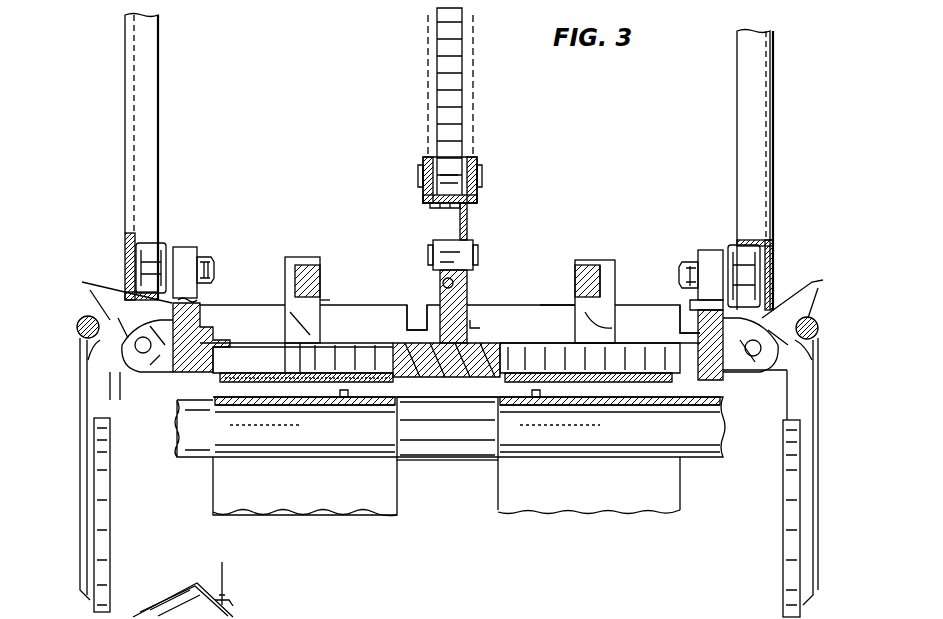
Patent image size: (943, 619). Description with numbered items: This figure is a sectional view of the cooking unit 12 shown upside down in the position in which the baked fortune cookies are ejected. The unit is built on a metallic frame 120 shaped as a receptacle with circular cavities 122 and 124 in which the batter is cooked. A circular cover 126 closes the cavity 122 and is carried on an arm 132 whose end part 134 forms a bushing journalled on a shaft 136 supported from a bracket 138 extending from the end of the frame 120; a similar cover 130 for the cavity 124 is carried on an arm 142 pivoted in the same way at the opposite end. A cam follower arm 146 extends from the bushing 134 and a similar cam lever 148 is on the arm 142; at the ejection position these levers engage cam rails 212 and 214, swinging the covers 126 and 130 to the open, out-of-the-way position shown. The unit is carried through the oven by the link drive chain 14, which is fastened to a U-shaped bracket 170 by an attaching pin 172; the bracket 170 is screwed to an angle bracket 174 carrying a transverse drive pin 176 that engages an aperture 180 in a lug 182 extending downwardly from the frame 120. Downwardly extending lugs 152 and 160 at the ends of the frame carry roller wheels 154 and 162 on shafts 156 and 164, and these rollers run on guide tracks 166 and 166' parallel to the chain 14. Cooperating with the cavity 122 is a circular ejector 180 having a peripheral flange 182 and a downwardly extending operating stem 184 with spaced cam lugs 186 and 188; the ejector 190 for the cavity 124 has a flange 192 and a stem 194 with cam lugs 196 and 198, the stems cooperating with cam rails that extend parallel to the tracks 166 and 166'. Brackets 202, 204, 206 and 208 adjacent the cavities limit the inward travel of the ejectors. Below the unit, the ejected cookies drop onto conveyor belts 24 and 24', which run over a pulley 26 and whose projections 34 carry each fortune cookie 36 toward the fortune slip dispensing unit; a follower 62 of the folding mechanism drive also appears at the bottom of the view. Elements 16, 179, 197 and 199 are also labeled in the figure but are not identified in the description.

The cooking unit 12 is at (650, 251).
The link drive chain 14 is at (475, 128).
The chain 16 is at (447, 76).
The conveyor belt 24 is at (323, 486).
The conveyor belt 24' is at (594, 498).
The pulley or roller 26 is at (332, 445).
The projections 34 is at (350, 398).
The fortune cookie 36 is at (388, 378).
The follower 62 is at (242, 615).
The metallic frame 120 is at (450, 293).
The circular cavity 122 is at (180, 398).
The circular cavity 124 is at (632, 398).
The circular cover 126 is at (92, 502).
The circular cover 130 is at (783, 540).
The arm 132 is at (82, 415).
The end part (bushing) 134 is at (123, 380).
The shaft 136 is at (140, 350).
The bracket 138 is at (88, 316).
The arm 142 is at (813, 390).
The cam follower arm 146 is at (82, 285).
The cam lever 148 is at (812, 290).
The lug 152 is at (195, 250).
The roller wheel 154 is at (160, 252).
The shaft 156 is at (213, 269).
The lug 160 is at (704, 258).
The roller wheel 162 is at (752, 258).
The shaft or stem 164 is at (693, 305).
The guide track 166 is at (166, 157).
The guide track 166' is at (724, 170).
The U-shaped bracket 170 is at (472, 200).
The attaching pin 172 is at (452, 176).
The angle bracket 174 is at (468, 226).
The transverse drive pin 176 is at (455, 258).
The rack 179 is at (328, 360).
The aperture 180 is at (468, 291).
The lug 182 is at (470, 300).
The operating stem 184 is at (294, 258).
The cam lug 186 is at (318, 306).
The cam lug 188 is at (318, 262).
The ejector 190 is at (525, 365).
The peripheral flange 192 is at (553, 322).
The operating stem 194 is at (618, 268).
The cam lug 196 is at (685, 318).
The insert 197 is at (322, 292).
The cam lug 198 is at (592, 264).
The post edge 199 is at (575, 265).
The bracket 202 is at (205, 322).
The bracket 204 is at (410, 322).
The bracket 206 is at (491, 318).
The bracket 208 is at (653, 338).
The cam rail 212 is at (78, 333).
The cam rail 214 is at (820, 330).